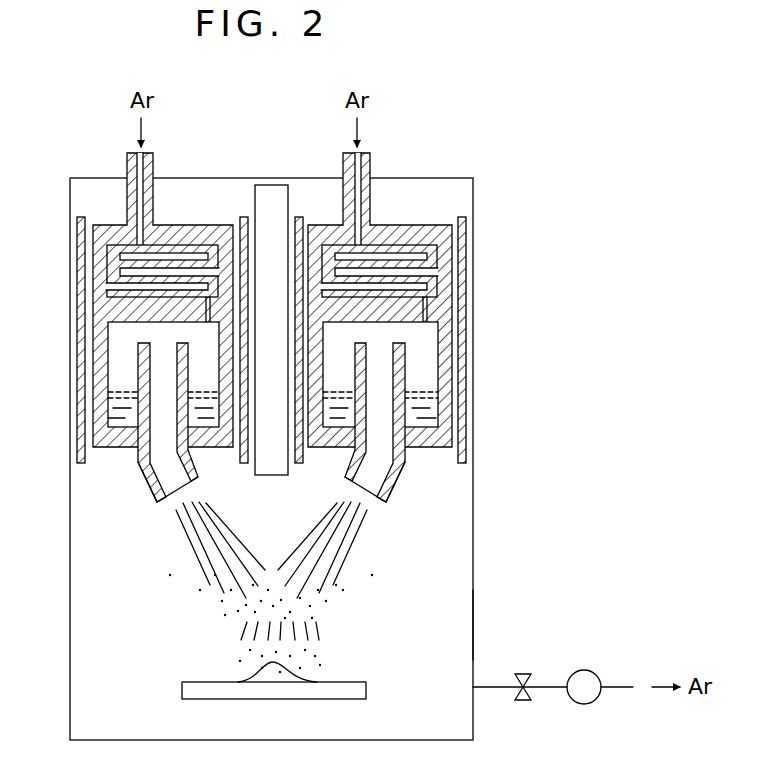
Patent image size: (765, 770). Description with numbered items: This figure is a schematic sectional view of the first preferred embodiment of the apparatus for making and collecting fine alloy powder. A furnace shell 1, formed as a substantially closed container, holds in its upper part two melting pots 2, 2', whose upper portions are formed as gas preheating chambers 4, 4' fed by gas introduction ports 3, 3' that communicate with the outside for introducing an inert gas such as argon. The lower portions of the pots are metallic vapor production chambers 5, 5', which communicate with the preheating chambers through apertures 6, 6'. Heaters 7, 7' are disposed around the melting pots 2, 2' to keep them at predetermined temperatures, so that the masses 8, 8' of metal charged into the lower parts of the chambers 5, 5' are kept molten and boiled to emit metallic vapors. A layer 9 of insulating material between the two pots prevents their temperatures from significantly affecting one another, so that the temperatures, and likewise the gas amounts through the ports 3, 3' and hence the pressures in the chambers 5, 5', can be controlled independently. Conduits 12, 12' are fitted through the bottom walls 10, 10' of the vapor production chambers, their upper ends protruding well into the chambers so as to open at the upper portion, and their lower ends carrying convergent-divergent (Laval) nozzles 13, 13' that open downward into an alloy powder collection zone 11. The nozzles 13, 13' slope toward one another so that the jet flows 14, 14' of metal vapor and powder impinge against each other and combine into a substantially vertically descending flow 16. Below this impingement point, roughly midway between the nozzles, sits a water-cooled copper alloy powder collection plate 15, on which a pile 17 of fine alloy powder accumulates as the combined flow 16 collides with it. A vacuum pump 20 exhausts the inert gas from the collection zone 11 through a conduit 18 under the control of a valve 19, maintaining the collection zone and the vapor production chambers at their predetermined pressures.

The furnace shell 1 is at (476, 196).
The melting pot 2 is at (134, 336).
The melting pot 2' is at (412, 336).
The gas introduction port 3 is at (157, 191).
The gas introduction port 3' is at (375, 191).
The gas preheating chamber 4 is at (127, 271).
The gas preheating chamber 4' is at (419, 271).
The metallic vapor production chamber 5 is at (127, 374).
The metallic vapor production chamber 5' is at (421, 374).
The aperture 6 is at (201, 329).
The aperture 6' is at (418, 329).
The heater 7 is at (142, 325).
The heater 7' is at (406, 325).
The mass of metal 8 is at (125, 415).
The mass of metal 8' is at (425, 415).
The layer of insulating material 9 is at (270, 200).
The bottom wall 10 is at (146, 422).
The bottom wall 10' is at (354, 422).
The alloy powder collection zone 11 is at (458, 628).
The conduit 12 is at (125, 384).
The conduit 12' is at (426, 384).
The nozzle 13 is at (154, 488).
The nozzle 13' is at (396, 489).
The jet flow 14 is at (209, 550).
The jet flow 14' is at (337, 550).
The alloy powder collection plate 15 is at (350, 690).
The combined flow 16 is at (243, 638).
The pile of fine alloy powder 17 is at (280, 683).
The conduit 18 is at (488, 685).
The valve 19 is at (525, 703).
The vacuum pump 20 is at (584, 670).